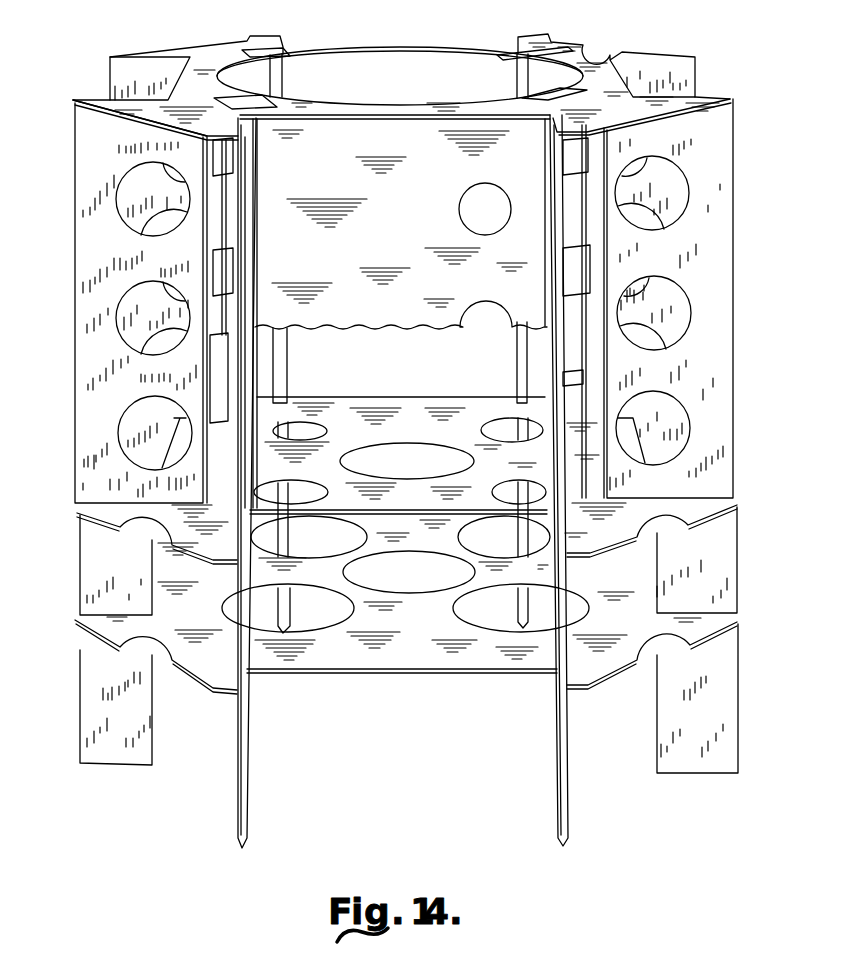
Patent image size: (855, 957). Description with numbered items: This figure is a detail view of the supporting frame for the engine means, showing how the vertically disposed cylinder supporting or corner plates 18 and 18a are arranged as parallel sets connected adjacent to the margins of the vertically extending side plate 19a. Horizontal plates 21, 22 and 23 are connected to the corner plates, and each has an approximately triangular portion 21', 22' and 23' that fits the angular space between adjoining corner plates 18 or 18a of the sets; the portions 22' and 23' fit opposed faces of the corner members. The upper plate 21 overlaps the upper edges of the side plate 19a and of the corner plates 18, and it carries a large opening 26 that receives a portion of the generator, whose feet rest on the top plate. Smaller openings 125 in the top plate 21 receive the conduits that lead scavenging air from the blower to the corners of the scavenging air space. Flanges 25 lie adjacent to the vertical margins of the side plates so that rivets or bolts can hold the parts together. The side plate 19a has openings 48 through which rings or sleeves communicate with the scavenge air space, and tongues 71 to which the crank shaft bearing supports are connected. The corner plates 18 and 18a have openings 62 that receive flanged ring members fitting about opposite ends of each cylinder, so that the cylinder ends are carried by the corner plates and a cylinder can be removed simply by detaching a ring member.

The opening 26 is at (350, 68).
The openings 125 is at (257, 98).
The top horizontal plate 21 is at (401, 218).
The triangular portion 21' is at (124, 133).
The cylinder supporting or corner plate 18 is at (87, 250).
The flange 25 is at (257, 247).
The opening 48 is at (470, 209).
The tongue 71 is at (577, 272).
The opening 62 is at (677, 302).
The side plate 19a is at (337, 313).
The horizontal plate 22 is at (398, 477).
The triangular portion 22' is at (138, 562).
The cylinder supporting or corner plate 18a is at (566, 573).
The horizontal plate 23 is at (405, 610).
The triangular portion 23' is at (142, 692).